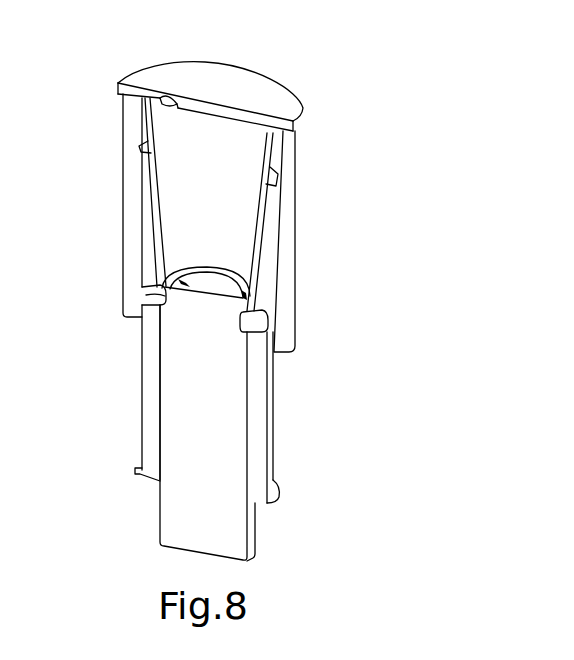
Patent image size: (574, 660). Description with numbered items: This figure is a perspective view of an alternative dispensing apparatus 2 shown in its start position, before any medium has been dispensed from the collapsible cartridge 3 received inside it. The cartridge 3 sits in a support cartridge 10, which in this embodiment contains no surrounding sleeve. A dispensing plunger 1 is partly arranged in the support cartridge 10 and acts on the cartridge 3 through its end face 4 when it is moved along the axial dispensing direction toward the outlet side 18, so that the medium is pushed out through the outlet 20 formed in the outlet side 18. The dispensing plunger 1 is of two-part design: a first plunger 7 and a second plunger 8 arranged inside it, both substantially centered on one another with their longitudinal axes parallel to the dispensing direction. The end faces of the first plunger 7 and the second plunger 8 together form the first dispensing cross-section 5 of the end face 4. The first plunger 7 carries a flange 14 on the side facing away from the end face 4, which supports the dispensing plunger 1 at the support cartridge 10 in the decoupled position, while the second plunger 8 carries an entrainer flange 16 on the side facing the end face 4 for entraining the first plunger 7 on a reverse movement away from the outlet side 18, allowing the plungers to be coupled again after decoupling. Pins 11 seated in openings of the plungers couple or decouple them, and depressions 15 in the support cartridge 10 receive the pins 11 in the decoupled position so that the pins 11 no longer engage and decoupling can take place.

The dispensing plunger 1 is at (159, 479).
The dispensing apparatus 2 is at (348, 71).
The collapsible cartridge 3 is at (274, 174).
The end face 4 is at (180, 275).
The first dispensing cross-section 5 is at (258, 298).
The first plunger 7 is at (275, 430).
The second plunger 8 is at (255, 538).
The support cartridge 10 is at (124, 132).
The pins 11 is at (258, 322).
The flange 14 is at (134, 471).
The depressions 15 is at (141, 149).
The entrainer flange 16 is at (150, 288).
The outlet side 18 is at (215, 80).
The outlet 20 is at (166, 95).